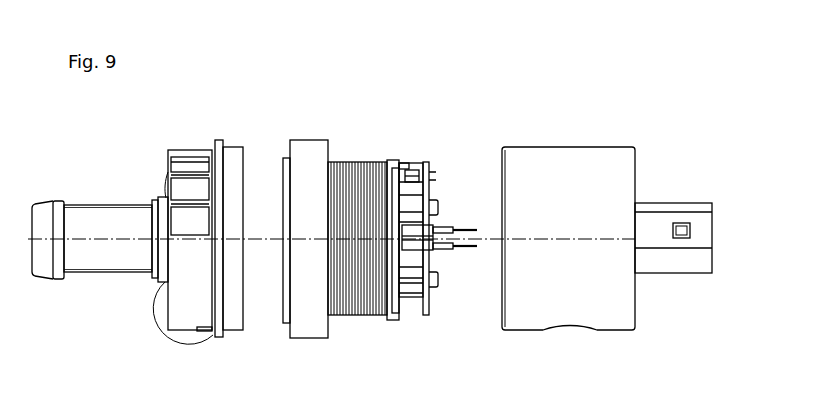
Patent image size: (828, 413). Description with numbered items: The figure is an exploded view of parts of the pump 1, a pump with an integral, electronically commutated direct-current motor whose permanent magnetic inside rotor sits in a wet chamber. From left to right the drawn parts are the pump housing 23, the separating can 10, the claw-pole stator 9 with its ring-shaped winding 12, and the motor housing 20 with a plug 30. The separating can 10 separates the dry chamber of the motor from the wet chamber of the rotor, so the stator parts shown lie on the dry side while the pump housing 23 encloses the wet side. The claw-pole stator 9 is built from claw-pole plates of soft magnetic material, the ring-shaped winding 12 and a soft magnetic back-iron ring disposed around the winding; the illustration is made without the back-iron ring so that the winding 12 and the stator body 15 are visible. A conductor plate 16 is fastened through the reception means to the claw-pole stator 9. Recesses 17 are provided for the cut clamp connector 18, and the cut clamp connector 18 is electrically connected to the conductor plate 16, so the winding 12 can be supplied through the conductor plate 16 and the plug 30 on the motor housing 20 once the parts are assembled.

The pump 1 is at (143, 358).
The claw-pole stator 9 is at (402, 222).
The separating can 10 is at (285, 308).
The winding 12 is at (360, 302).
The coil carrier body 15 is at (412, 283).
The conductor plate 16 is at (427, 165).
The recesses 17 is at (407, 167).
The cut clamp connector 18 is at (413, 170).
The motor housing 20 is at (540, 297).
The pump housing 23 is at (194, 167).
The plug 30 is at (680, 257).